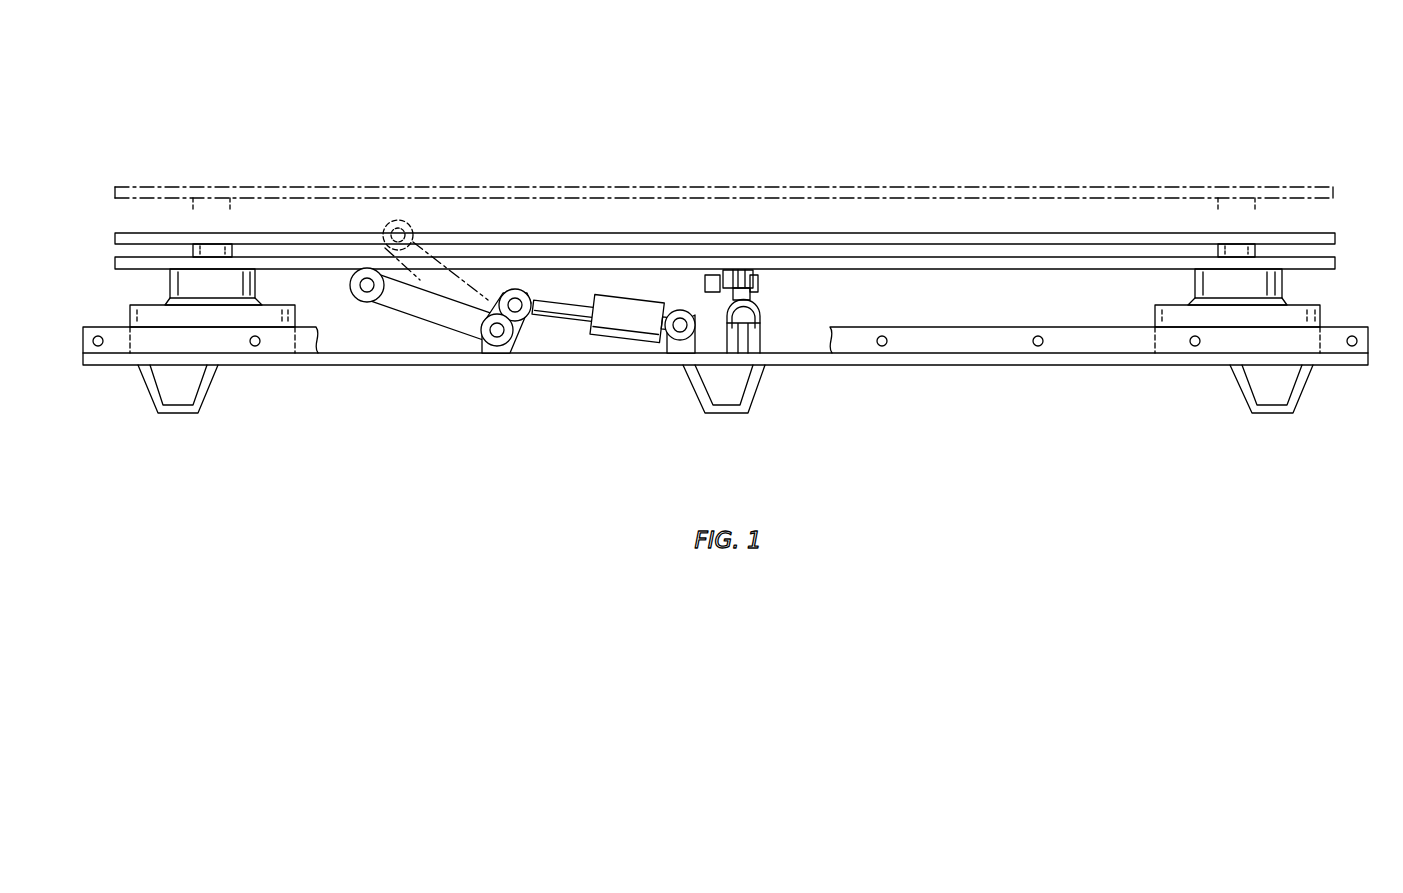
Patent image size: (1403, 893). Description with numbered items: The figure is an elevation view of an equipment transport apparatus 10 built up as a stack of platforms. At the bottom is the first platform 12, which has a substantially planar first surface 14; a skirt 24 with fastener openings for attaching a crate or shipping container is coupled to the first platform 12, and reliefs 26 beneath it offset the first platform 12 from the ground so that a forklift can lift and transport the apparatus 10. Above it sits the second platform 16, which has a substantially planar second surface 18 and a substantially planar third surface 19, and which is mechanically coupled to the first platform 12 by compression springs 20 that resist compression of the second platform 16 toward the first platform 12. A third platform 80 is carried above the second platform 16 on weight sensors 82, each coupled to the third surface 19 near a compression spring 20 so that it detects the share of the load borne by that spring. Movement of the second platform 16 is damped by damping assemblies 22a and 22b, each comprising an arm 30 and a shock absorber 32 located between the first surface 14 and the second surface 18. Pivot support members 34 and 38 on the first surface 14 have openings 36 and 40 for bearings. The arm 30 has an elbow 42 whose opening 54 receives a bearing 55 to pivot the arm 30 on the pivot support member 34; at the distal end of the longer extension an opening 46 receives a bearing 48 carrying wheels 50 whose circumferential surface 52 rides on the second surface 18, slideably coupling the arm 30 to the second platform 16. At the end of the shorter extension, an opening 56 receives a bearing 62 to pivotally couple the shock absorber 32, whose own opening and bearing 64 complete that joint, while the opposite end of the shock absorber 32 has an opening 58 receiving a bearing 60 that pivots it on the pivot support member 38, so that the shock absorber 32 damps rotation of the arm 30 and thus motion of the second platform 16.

The equipment transport apparatus 10 is at (375, 95).
The first platform 12 is at (725, 373).
The first surface 14 is at (995, 373).
The second platform 16 is at (1337, 265).
The second surface 18 is at (985, 270).
The third surface 19 is at (752, 231).
The compression springs 20 is at (170, 283).
The damping assembly 22a is at (606, 280).
The damping assembly 22b is at (778, 326).
The skirt 24 is at (990, 343).
The reliefs 26 is at (178, 413).
The arm 30 is at (415, 339).
The shock absorber 32 is at (625, 340).
The pivot support member 34 is at (484, 281).
The opening 36 is at (463, 369).
The pivot support member 38 is at (684, 277).
The opening 40 is at (667, 239).
The elbow 42 is at (487, 281).
The opening 46 is at (372, 305).
The bearing 48 is at (339, 222).
The wheels 50 is at (357, 273).
The circumferential surface 52 is at (370, 268).
The opening 54 is at (485, 343).
The bearing 55 is at (497, 338).
The opening 56 is at (464, 228).
The opening 58 is at (680, 318).
The bearing 60 is at (684, 245).
The bearing 62 is at (502, 293).
The bearing 64 is at (515, 305).
The third platform 80 is at (1052, 187).
The weight sensors 82 is at (213, 245).